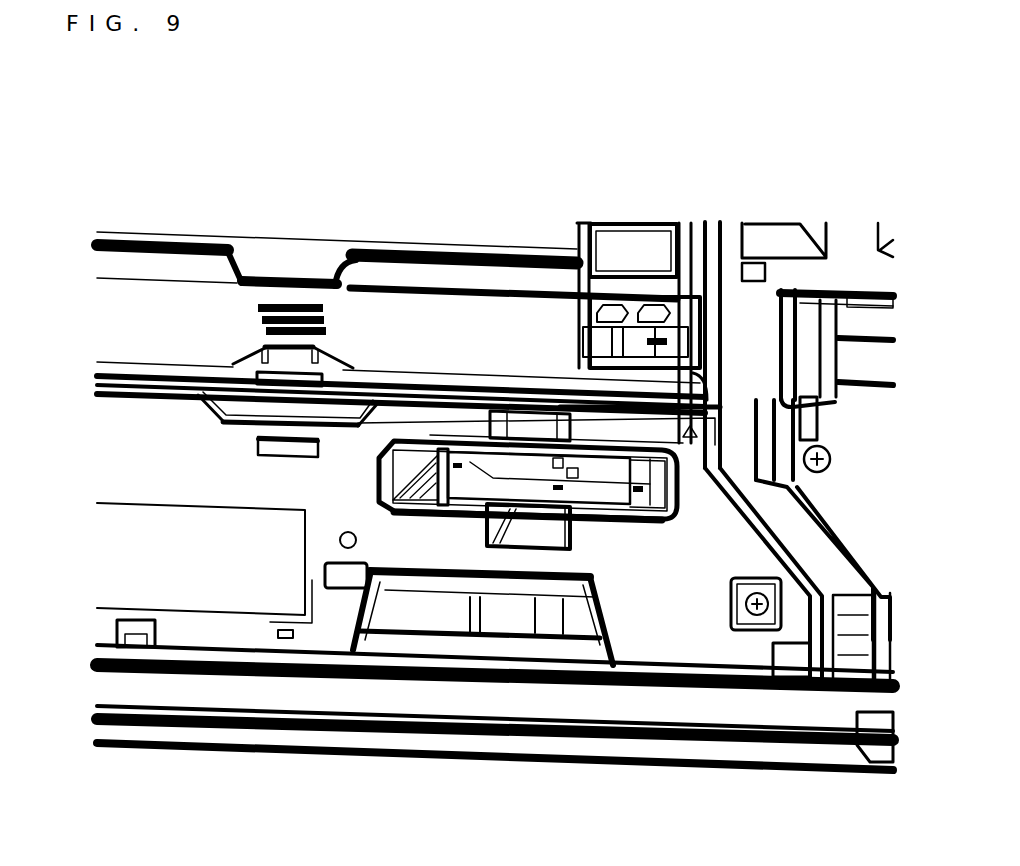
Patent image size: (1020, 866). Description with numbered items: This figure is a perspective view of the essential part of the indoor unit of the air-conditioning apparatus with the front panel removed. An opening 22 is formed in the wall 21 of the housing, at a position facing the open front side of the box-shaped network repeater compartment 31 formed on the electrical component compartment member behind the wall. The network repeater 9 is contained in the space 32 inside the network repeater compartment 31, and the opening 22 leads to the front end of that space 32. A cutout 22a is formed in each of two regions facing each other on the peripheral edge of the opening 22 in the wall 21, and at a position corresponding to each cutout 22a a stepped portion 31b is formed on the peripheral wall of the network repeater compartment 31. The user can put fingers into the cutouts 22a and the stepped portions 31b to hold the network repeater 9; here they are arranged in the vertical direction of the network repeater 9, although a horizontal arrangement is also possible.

The network repeater 9 is at (512, 463).
The wall 21 is at (233, 627).
The opening 22 is at (448, 517).
The cutout 22a is at (520, 549).
The network repeater compartment 31 is at (403, 463).
The stepped portion 31b is at (543, 527).
The space 32 is at (422, 463).